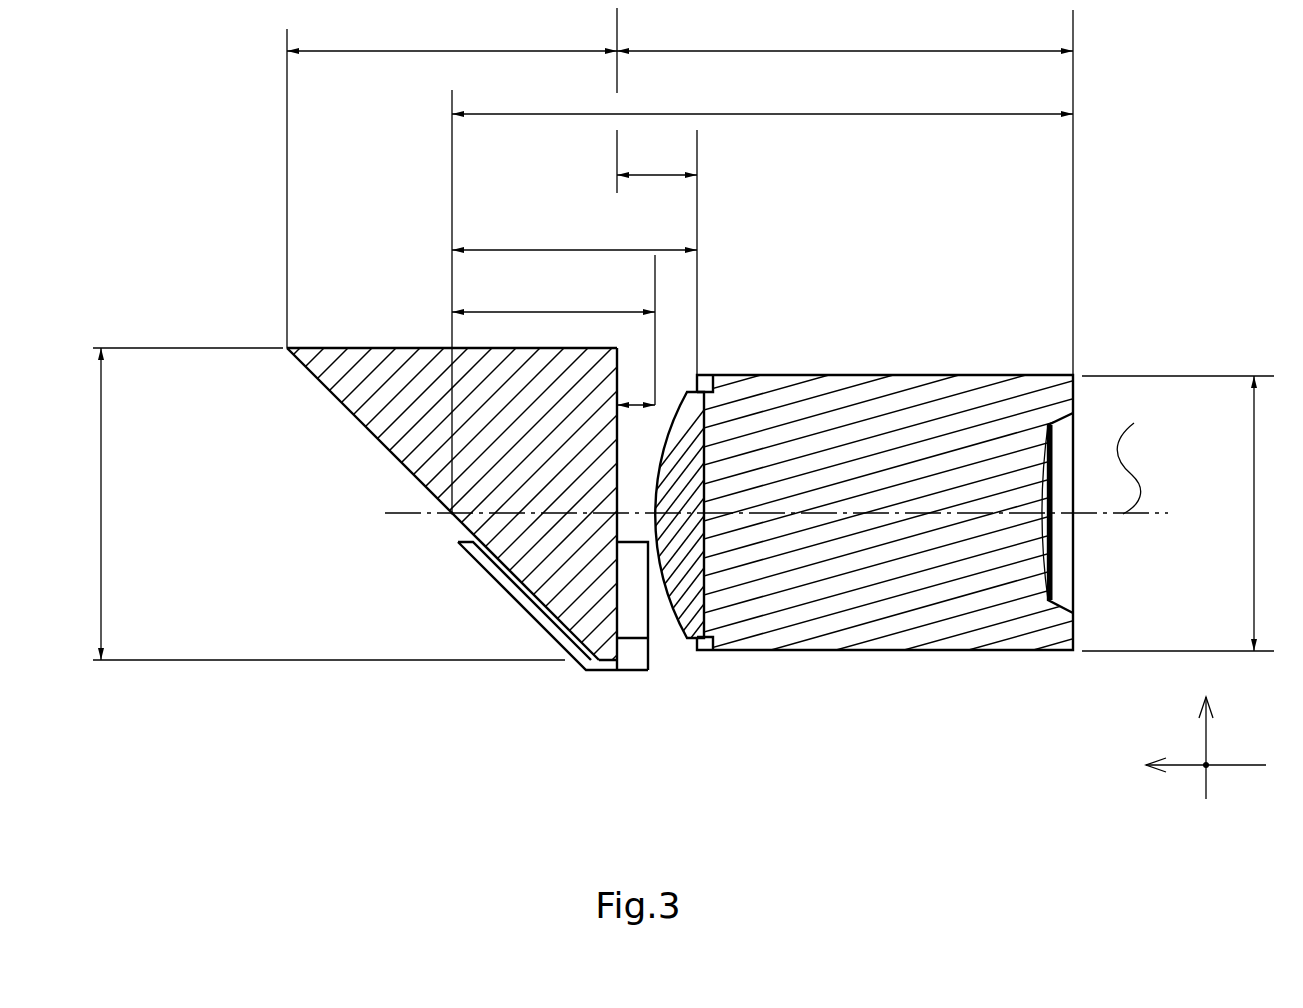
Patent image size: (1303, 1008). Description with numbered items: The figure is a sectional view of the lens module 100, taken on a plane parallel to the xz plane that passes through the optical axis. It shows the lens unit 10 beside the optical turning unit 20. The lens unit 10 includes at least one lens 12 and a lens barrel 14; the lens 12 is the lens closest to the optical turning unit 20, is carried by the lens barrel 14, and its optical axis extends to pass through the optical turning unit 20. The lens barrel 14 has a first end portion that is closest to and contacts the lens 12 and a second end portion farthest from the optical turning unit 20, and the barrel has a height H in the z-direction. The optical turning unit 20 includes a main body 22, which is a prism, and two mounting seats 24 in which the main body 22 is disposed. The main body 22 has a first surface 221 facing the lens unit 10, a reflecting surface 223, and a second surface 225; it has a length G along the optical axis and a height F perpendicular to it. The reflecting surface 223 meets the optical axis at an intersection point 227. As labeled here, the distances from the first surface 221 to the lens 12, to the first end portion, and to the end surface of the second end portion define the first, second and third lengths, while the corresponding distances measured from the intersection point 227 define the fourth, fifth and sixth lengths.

The lens module 100 is at (52, 176).
The lens unit 10 is at (972, 767).
The lens 12 is at (678, 550).
The lens barrel 14 is at (950, 605).
The optical turning unit 20 is at (222, 500).
The main body 22 is at (462, 436).
The mounting seats 24 is at (517, 595).
The first surface 221 is at (618, 527).
The reflecting surface 223 is at (358, 420).
The second surface 225 is at (385, 348).
The intersection point 227 is at (452, 515).